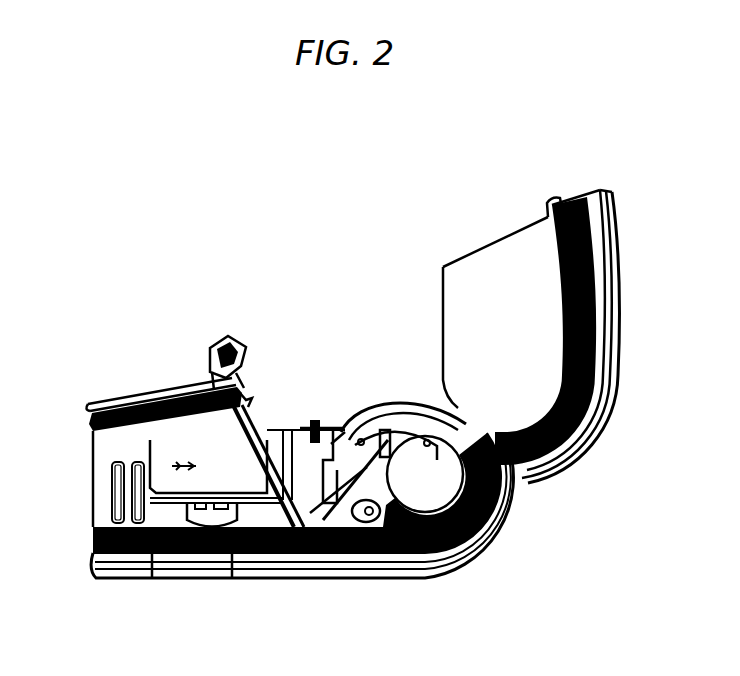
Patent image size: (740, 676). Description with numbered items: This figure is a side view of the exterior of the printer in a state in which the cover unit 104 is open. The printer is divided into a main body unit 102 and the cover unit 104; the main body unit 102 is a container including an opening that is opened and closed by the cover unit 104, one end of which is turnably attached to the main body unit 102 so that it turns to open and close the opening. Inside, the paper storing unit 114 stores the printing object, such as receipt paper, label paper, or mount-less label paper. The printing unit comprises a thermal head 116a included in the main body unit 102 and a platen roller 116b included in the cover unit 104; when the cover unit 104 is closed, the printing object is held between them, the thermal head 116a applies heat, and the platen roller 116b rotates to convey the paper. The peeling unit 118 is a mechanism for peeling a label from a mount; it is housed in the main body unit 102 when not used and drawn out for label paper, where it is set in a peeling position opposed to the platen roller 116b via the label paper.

The main body unit 102 is at (90, 548).
The cover unit 104 is at (613, 232).
The paper storing unit 114 is at (419, 380).
The thermal head 116a is at (233, 386).
The platen roller 116b is at (546, 203).
The peeling unit 118 is at (236, 340).